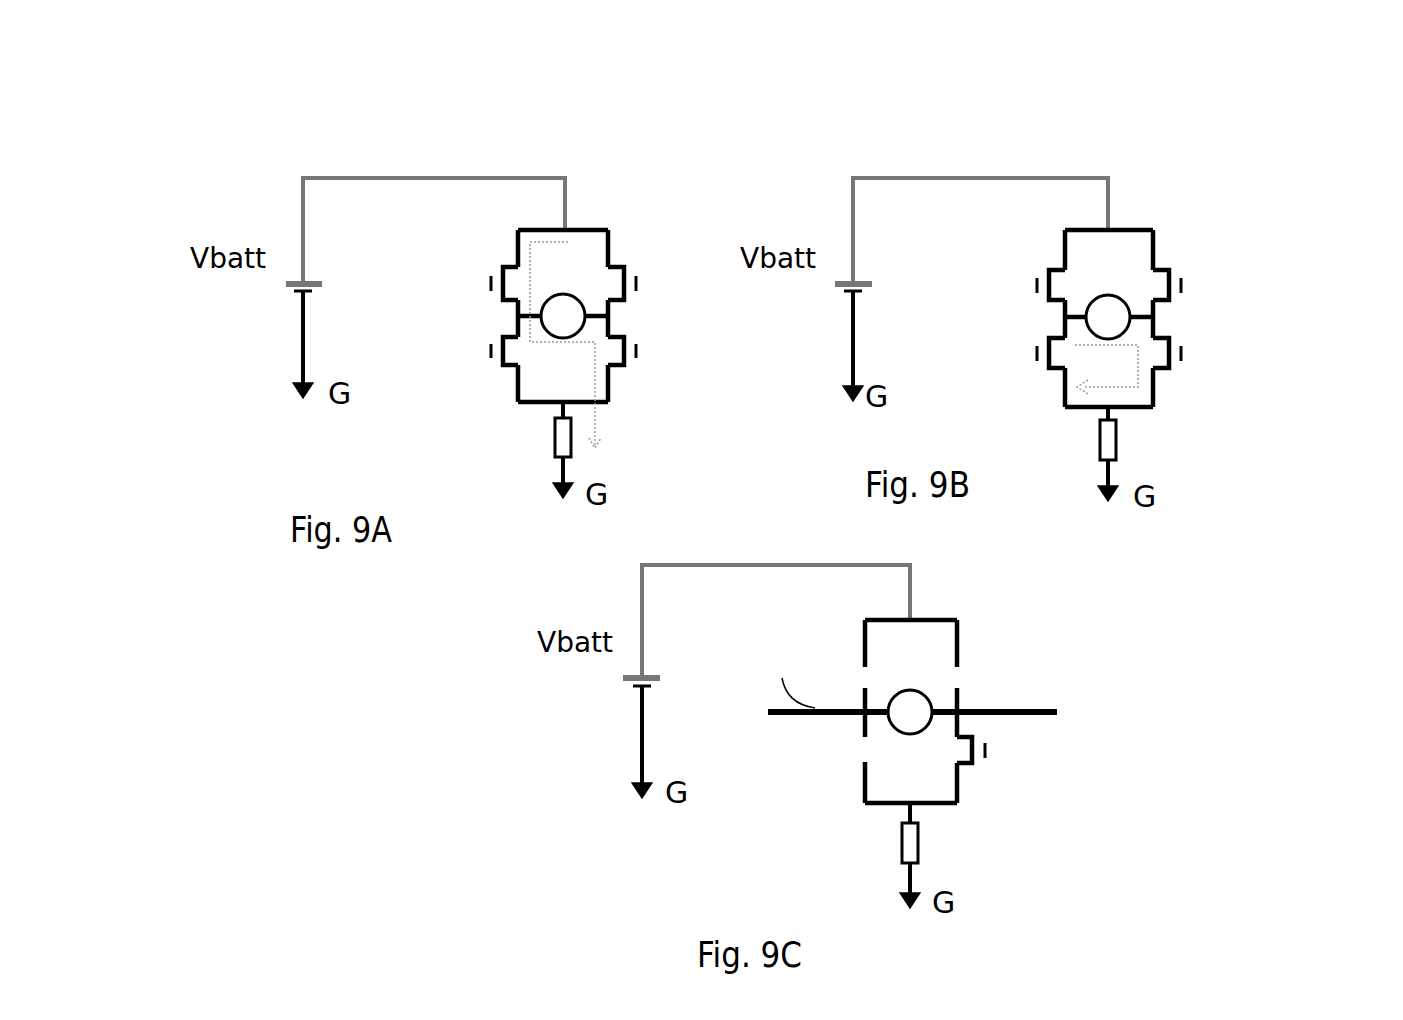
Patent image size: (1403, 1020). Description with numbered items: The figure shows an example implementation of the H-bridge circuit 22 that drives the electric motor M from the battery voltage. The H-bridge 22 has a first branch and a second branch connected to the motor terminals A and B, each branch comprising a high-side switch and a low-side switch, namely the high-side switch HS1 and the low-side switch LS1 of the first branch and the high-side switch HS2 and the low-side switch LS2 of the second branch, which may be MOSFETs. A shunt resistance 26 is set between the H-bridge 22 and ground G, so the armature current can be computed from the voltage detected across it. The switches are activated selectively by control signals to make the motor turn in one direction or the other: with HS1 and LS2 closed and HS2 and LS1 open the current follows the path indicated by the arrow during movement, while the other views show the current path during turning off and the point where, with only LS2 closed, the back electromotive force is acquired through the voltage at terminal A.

In FIG. 9A, the H-bridge circuit 22 is at (652, 127).
In FIG. 9B, the H-bridge circuit 22 is at (1237, 154).
In FIG. 9C, the H-bridge circuit 22 is at (1044, 640).
In FIG. 9A, the shunt resistance 26 is at (539, 450).
In FIG. 9B, the shunt resistance 26 is at (1085, 454).
In FIG. 9C, the shunt resistance 26 is at (889, 855).
In FIG. 9A, the high-side switch of the first branch HS1 is at (470, 283).
In FIG. 9B, the high-side switch of the first branch HS1 is at (1015, 284).
In FIG. 9A, the high-side switch of the second branch HS2 is at (654, 283).
In FIG. 9B, the high-side switch of the second branch HS2 is at (1200, 284).
In FIG. 9A, the low-side switch of the first branch LS1 is at (476, 351).
In FIG. 9B, the low-side switch of the first branch LS1 is at (1019, 352).
In FIG. 9A, the low-side switch of the second branch LS2 is at (652, 351).
In FIG. 9B, the low-side switch of the second branch LS2 is at (1208, 352).
In FIG. 9C, the low-side switch of the second branch LS2 is at (1005, 751).